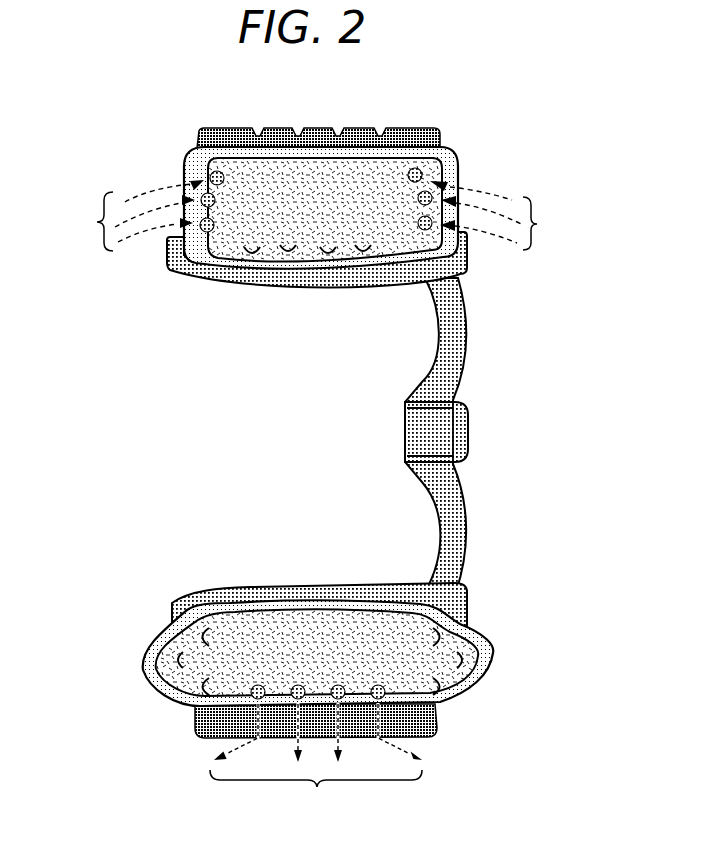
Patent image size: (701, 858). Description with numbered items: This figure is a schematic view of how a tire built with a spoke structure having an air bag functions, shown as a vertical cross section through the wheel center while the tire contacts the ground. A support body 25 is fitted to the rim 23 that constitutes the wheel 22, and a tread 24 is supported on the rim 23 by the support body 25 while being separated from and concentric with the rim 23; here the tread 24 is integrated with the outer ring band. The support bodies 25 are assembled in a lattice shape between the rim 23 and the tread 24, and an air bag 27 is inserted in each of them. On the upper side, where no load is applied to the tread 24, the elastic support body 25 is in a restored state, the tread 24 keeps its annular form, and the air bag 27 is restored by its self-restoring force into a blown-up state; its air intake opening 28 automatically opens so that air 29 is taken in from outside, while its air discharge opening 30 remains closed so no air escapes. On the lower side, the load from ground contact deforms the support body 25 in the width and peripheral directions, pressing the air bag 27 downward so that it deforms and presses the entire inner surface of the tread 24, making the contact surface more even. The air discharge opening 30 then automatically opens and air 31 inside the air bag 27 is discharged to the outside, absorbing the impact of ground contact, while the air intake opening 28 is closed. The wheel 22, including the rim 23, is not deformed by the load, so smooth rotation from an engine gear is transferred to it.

The wheel 22 is at (448, 370).
The rim 23 is at (186, 266).
The tread 24 is at (413, 131).
The support body 25 is at (444, 167).
The air bag 27 is at (302, 225).
The air intake opening 28 is at (216, 172).
The air 29 is at (318, 215).
The air discharge opening 30 is at (284, 255).
The air 31 is at (316, 758).